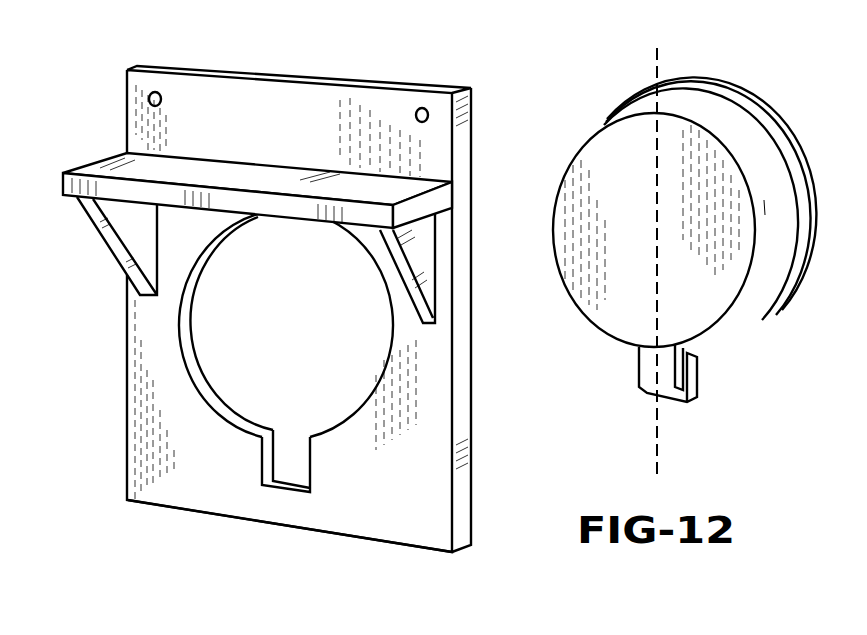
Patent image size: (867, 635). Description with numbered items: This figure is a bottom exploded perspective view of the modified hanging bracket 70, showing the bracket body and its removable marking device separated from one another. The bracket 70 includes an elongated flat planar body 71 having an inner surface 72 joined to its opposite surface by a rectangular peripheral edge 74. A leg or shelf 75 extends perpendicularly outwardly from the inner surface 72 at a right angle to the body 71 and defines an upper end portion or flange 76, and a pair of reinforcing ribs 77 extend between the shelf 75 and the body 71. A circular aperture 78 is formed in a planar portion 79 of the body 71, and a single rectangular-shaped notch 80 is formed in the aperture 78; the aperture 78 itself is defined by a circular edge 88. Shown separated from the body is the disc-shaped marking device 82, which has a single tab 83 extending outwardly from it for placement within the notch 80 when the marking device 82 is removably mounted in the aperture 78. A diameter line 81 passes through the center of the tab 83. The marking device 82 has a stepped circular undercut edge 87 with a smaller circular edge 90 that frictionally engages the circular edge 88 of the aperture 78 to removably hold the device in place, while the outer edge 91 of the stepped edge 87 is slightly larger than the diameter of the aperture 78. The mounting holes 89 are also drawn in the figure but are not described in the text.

The bracket 70 is at (450, 27).
The body 71 is at (118, 386).
The inner surface 72 is at (230, 483).
The peripheral edge 74 is at (457, 335).
The shelf 75 is at (92, 165).
The flange 76 is at (427, 137).
The reinforcing ribs 77 is at (117, 240).
The circular aperture 78 is at (376, 353).
The planar portion 79 is at (418, 502).
The notch 80 is at (304, 470).
The diameter line 81 is at (655, 80).
The marking device 82 is at (772, 313).
The tab 83 is at (647, 367).
The stepped circular undercut edge 87 is at (770, 207).
The circular edge 88 is at (190, 327).
The mounting hole 89 is at (155, 92).
The smaller circular edge 90 is at (700, 120).
The outer edge 91 is at (748, 142).